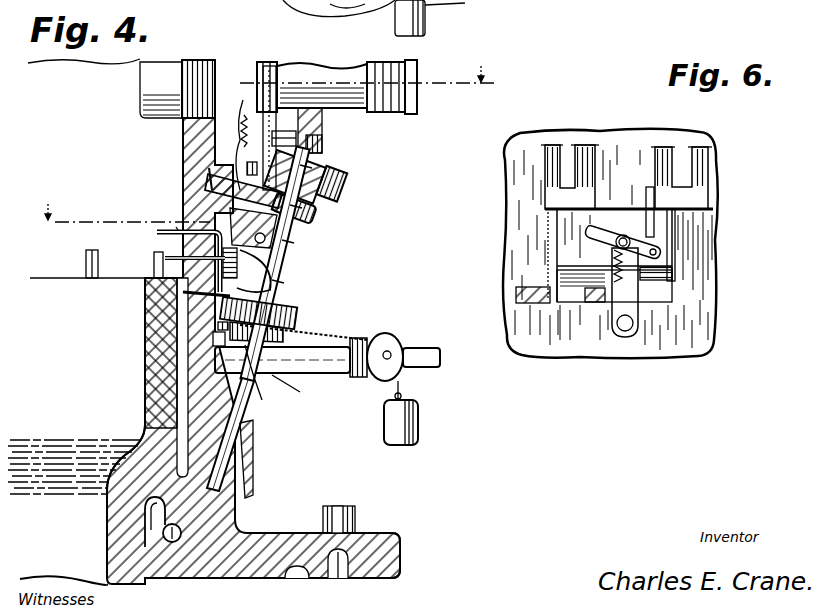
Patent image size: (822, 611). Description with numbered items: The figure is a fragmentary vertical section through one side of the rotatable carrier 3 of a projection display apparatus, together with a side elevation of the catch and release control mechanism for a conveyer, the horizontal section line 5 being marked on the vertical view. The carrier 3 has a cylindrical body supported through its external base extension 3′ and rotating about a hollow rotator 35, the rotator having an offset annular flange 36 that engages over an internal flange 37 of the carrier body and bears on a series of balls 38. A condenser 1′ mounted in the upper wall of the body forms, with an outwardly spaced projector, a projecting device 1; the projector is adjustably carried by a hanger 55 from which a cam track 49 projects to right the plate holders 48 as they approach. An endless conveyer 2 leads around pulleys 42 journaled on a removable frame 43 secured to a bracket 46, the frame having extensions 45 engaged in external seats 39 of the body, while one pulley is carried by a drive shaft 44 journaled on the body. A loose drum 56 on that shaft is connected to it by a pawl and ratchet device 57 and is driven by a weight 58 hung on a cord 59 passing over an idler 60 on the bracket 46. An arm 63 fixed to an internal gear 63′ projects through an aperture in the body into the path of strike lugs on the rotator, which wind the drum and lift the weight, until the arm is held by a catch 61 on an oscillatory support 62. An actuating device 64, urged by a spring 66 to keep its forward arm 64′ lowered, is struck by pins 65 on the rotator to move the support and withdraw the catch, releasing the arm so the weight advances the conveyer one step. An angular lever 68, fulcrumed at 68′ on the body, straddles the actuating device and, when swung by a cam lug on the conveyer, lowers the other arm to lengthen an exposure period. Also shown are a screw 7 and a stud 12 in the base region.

In FIG. 4, the projecting device 1 is at (275, 64).
In FIG. 4, the condenser 1′ is at (153, 78).
In FIG. 4, the conveyer 2 is at (345, 172).
In FIG. 4, the carrier 3 is at (240, 512).
In FIG. 4, the external base extension 3′ is at (398, 550).
In FIG. 4, the section line 5 is at (264, 149).
In FIG. 4, the fastening hole 7 is at (337, 578).
In FIG. 4, the stud 12 is at (356, 512).
In FIG. 4, the rotator 35 is at (125, 561).
In FIG. 6, the rotator 35 is at (558, 268).
In FIG. 4, the offset external annular flange 36 is at (150, 514).
In FIG. 4, the internal flange 37 is at (153, 528).
In FIG. 4, the balls 38 is at (174, 543).
In FIG. 4, the external seat 39 is at (210, 182).
In FIG. 6, the external seat 39 is at (567, 170).
In FIG. 4, the pulley 42 is at (346, 193).
In FIG. 4, the frame 43 is at (345, 218).
In FIG. 4, the drive shaft 44 is at (232, 445).
In FIG. 4, the spaced extensions 45 is at (203, 183).
In FIG. 4, the bracket 46 is at (440, 24).
In FIG. 4, the holder 48 is at (263, 72).
In FIG. 4, the cam track 49 is at (298, 136).
In FIG. 4, the hanger 55 is at (340, 152).
In FIG. 4, the loose drum 56 is at (288, 380).
In FIG. 4, the pawl and ratchet device 57 is at (256, 382).
In FIG. 4, the weight 58 is at (330, 5).
In FIG. 4, the flexible connection 59 is at (368, 343).
In FIG. 4, the idler 60 is at (403, 345).
In FIG. 4, the catch 61 is at (215, 300).
In FIG. 6, the catch 61 is at (556, 280).
In FIG. 4, the oscillatory support 62 is at (150, 375).
In FIG. 6, the oscillatory support 62 is at (636, 340).
In FIG. 4, the arm 63 is at (246, 140).
In FIG. 6, the arm 63 is at (594, 302).
In FIG. 4, the internal gear 63′ is at (298, 318).
In FIG. 4, the actuating device 64 is at (176, 227).
In FIG. 6, the actuating device 64 is at (606, 232).
In FIG. 4, the forward arm 64′ is at (156, 232).
In FIG. 4, the pin 65 is at (158, 262).
In FIG. 6, the pin 65 is at (660, 262).
In FIG. 4, the spring 66 is at (272, 265).
In FIG. 6, the spring 66 is at (604, 253).
In FIG. 4, the angular lever 68 is at (272, 274).
In FIG. 4, the fulcrum 68′ is at (290, 245).